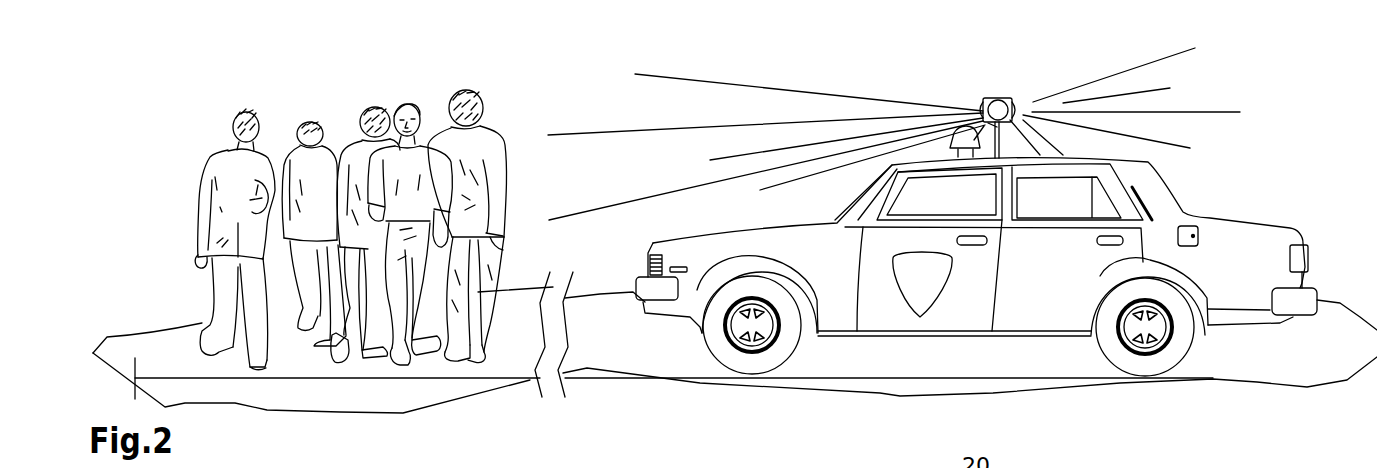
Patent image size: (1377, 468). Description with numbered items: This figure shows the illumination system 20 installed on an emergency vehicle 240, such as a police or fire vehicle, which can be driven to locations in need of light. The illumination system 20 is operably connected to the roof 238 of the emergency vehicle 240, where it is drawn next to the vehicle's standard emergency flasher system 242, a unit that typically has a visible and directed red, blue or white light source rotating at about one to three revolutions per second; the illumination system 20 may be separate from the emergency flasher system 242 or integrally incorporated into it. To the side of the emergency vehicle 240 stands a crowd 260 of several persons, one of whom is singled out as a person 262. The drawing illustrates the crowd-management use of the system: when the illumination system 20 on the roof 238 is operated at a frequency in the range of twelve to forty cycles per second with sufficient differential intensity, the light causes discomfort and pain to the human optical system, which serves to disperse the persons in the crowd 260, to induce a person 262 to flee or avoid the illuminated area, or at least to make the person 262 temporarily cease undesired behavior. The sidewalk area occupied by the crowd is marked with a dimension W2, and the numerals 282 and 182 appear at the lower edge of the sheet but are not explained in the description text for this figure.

The illumination system 20 is at (1003, 95).
The roof 238 is at (1057, 155).
The emergency vehicle 240 is at (1177, 203).
The emergency flasher system 242 is at (957, 137).
The crowd 260 is at (432, 70).
The person 262 is at (210, 160).
The sidewalk width W2 is at (440, 380).
The element of adjacent figure 282 is at (702, 455).
The element of adjacent figure 182 is at (808, 450).